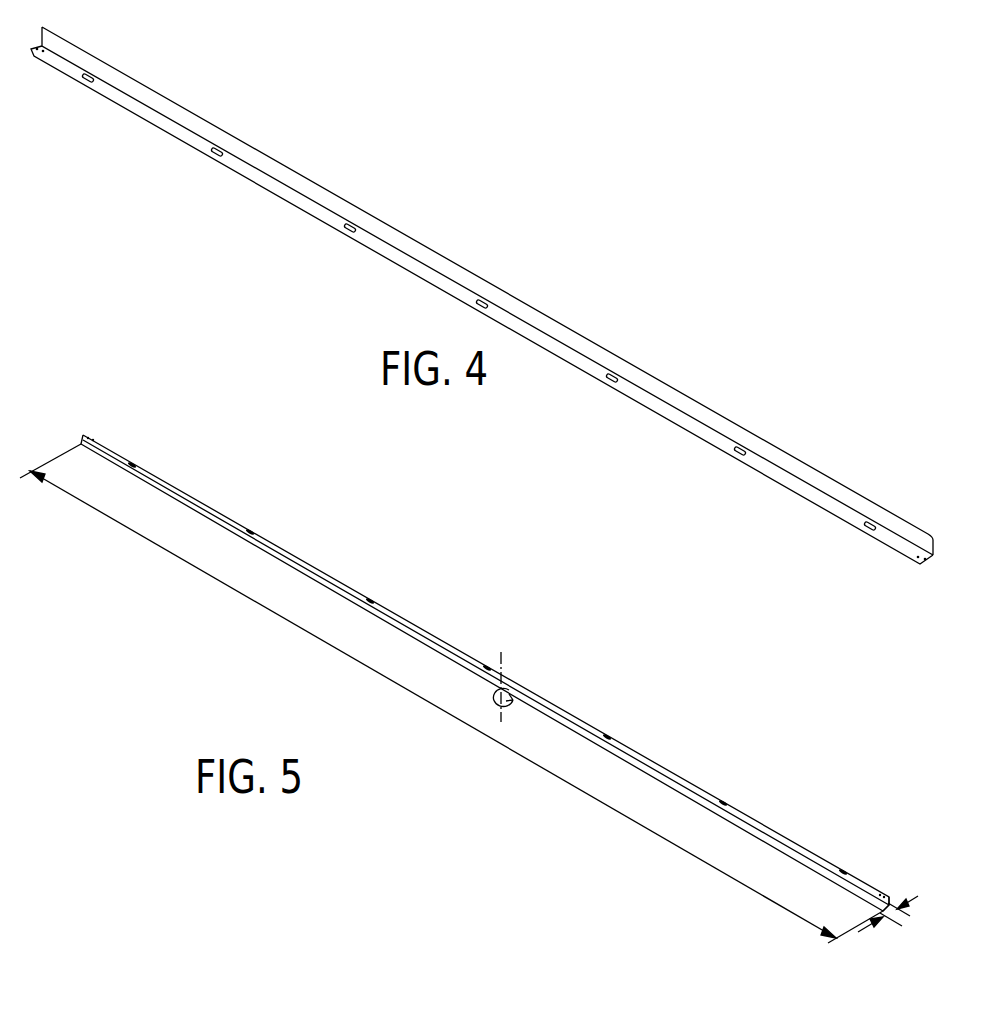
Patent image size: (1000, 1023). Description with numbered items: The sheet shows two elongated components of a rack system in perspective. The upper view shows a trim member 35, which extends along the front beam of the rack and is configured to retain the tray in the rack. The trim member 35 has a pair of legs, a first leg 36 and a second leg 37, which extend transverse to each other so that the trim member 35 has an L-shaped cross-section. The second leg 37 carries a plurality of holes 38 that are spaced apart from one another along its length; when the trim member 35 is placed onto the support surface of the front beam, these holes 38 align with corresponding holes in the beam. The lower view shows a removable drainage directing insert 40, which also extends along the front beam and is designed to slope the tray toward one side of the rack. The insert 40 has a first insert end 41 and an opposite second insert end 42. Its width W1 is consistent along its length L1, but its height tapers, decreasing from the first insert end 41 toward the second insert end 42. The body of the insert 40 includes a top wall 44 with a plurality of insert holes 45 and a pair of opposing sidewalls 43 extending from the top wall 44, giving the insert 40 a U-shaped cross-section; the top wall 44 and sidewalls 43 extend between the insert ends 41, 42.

In FIG. 4, the trim member 35 is at (482, 295).
In FIG. 4, the first leg 36 is at (196, 127).
In FIG. 4, the second leg 37 is at (270, 182).
In FIG. 4, the holes 38 is at (84, 82).
In FIG. 5, the drainage directing insert 40 is at (507, 629).
In FIG. 5, the first insert end 41 is at (908, 824).
In FIG. 5, the second insert end 42 is at (94, 402).
In FIG. 5, the sidewalls 43 is at (884, 905).
In FIG. 5, the top wall 44 is at (781, 833).
In FIG. 5, the insert holes 45 is at (133, 465).
In FIG. 5, the length L1 is at (451, 693).
In FIG. 5, the width W1 is at (868, 925).